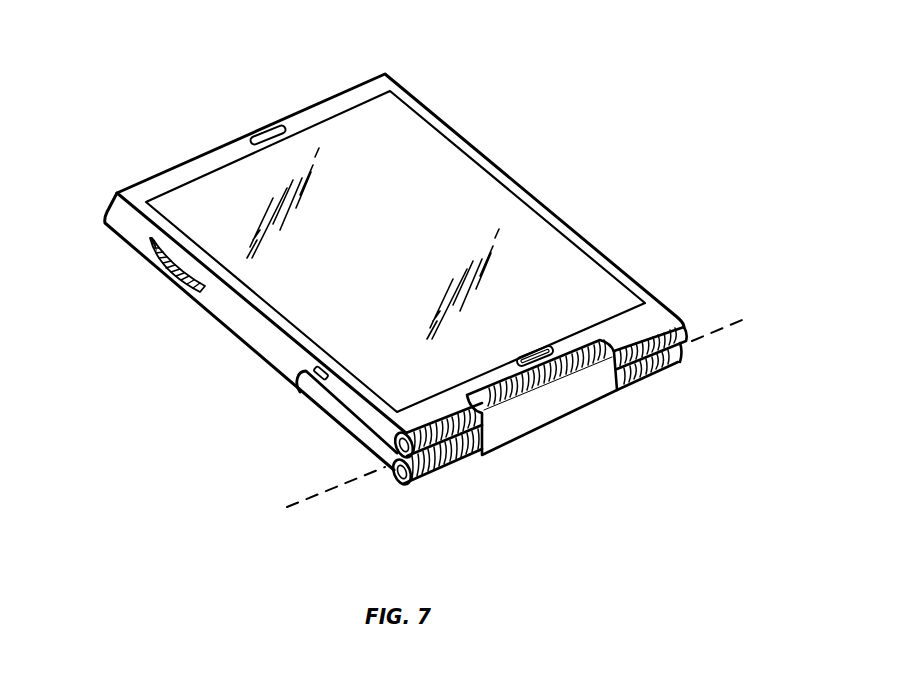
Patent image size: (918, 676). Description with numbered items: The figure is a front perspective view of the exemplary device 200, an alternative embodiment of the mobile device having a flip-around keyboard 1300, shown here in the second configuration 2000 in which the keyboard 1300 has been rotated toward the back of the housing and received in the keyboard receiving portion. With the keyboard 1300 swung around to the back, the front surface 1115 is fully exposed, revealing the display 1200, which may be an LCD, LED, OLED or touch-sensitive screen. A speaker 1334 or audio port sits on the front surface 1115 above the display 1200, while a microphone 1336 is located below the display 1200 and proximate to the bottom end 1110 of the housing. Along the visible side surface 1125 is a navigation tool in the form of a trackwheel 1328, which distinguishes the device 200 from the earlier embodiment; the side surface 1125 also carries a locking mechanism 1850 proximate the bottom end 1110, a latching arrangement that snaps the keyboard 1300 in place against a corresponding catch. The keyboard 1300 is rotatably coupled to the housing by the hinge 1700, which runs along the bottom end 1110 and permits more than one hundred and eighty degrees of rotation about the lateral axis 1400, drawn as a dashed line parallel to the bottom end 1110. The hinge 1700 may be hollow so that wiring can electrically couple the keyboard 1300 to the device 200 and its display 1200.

The device 200 is at (132, 68).
The second configuration 2000 is at (632, 114).
The front surface 1115 is at (148, 188).
The side surface 1125 is at (120, 222).
The display 1200 is at (547, 246).
The speaker 1334 is at (263, 136).
The microphone 1336 is at (540, 349).
The trackwheel 1328 is at (151, 258).
The keyboard 1300 is at (357, 434).
The locking mechanism 1850 is at (300, 379).
The bottom end 1110 is at (450, 440).
The hinge 1700 is at (557, 403).
The lateral axis 1400 is at (724, 323).